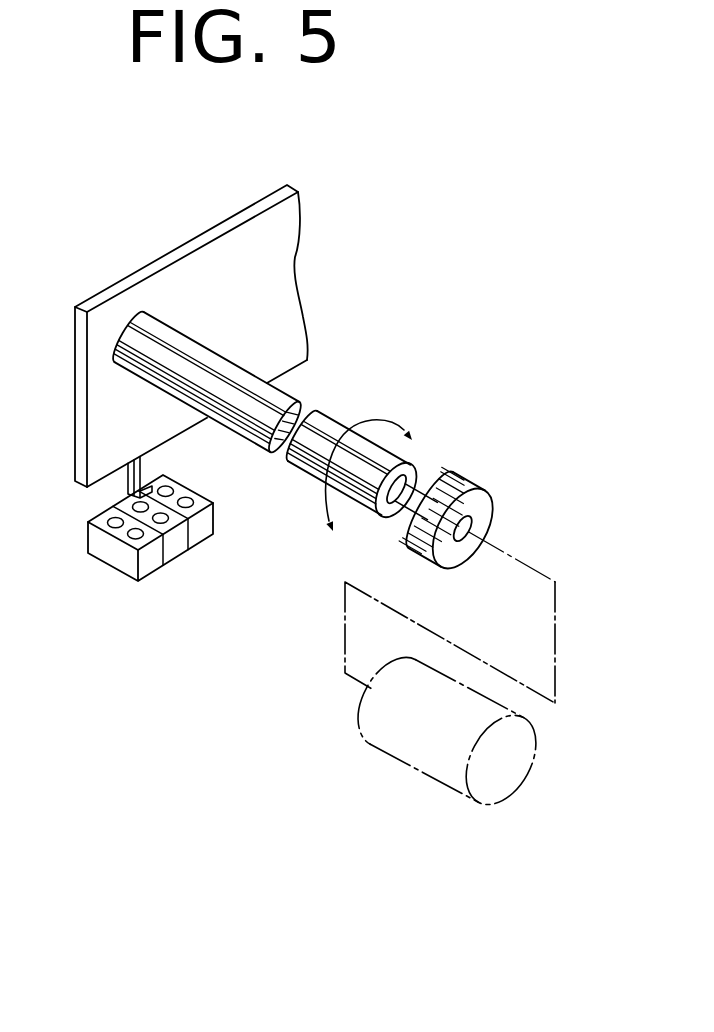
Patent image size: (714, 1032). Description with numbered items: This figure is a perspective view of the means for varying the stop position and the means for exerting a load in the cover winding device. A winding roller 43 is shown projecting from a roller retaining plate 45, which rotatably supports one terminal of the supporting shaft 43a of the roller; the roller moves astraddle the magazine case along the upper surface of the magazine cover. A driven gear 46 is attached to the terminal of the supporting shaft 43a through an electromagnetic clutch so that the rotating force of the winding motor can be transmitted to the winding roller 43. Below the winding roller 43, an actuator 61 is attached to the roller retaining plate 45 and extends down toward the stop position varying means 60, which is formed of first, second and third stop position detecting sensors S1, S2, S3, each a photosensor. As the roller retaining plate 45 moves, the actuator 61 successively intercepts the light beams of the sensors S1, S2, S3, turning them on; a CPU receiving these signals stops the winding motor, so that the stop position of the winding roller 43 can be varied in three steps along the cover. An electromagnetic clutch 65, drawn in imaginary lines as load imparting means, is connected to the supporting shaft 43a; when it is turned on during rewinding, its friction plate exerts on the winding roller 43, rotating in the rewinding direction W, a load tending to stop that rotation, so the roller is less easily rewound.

The roller retaining plate 45 is at (291, 298).
The winding roller 43 is at (290, 391).
The supporting shaft 43a is at (420, 486).
The driven gear 46 is at (477, 505).
The direction of rewinding W is at (379, 476).
The actuator 61 is at (143, 463).
The stop position varying means 60 is at (90, 570).
The first stop position detecting sensor S1 is at (153, 562).
The second stop position detecting sensor S2 is at (177, 548).
The third stop position detecting sensor S3 is at (200, 532).
The electromagnetic clutch 65 is at (390, 753).